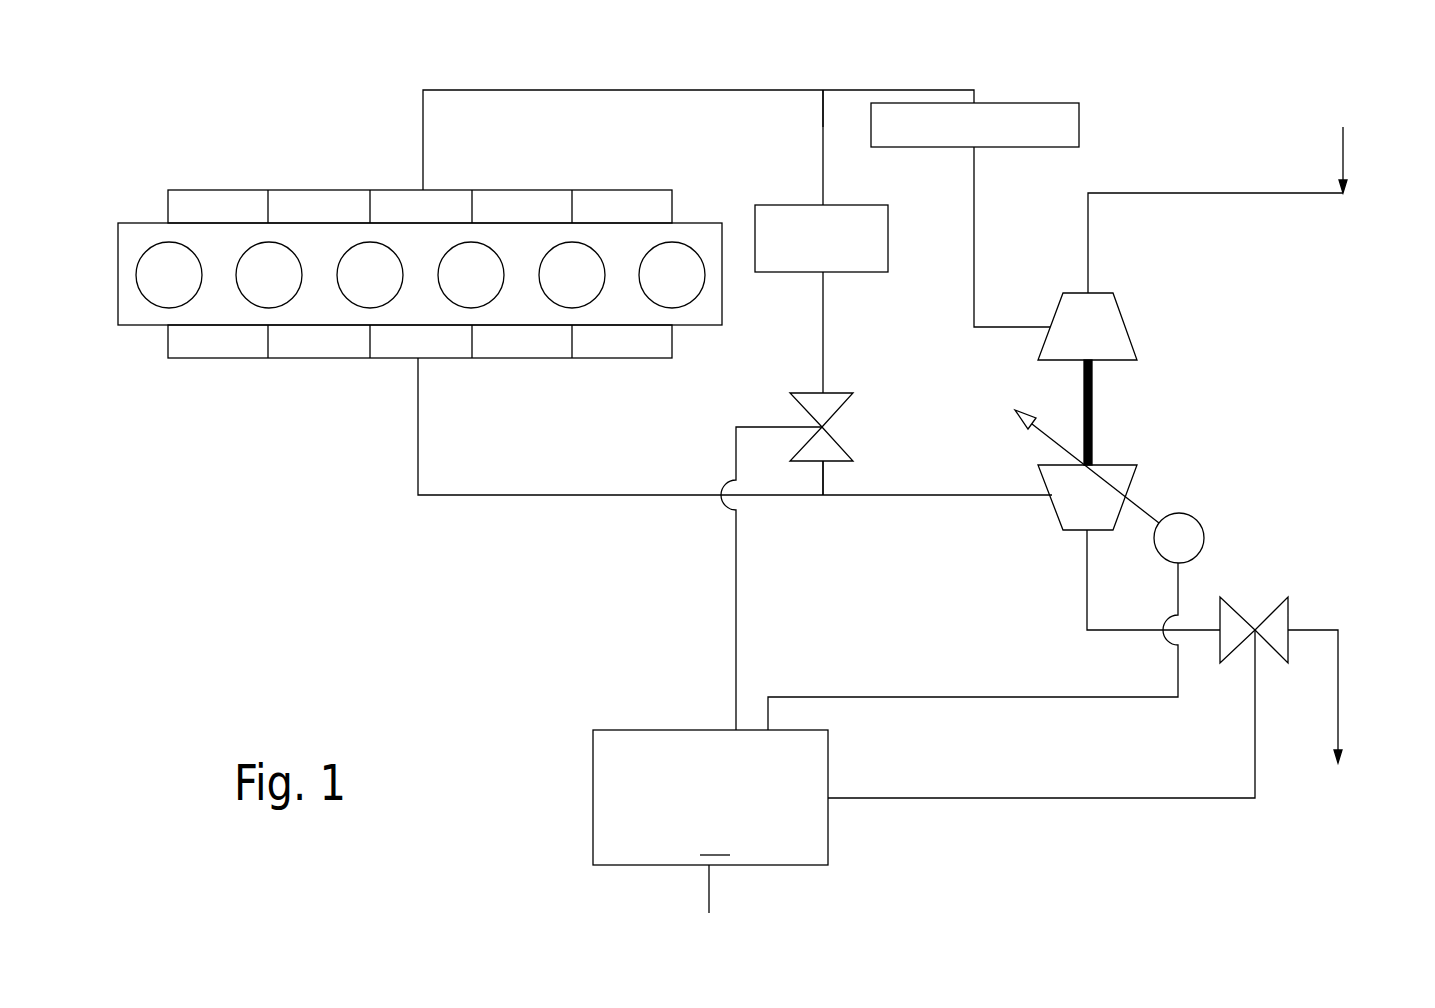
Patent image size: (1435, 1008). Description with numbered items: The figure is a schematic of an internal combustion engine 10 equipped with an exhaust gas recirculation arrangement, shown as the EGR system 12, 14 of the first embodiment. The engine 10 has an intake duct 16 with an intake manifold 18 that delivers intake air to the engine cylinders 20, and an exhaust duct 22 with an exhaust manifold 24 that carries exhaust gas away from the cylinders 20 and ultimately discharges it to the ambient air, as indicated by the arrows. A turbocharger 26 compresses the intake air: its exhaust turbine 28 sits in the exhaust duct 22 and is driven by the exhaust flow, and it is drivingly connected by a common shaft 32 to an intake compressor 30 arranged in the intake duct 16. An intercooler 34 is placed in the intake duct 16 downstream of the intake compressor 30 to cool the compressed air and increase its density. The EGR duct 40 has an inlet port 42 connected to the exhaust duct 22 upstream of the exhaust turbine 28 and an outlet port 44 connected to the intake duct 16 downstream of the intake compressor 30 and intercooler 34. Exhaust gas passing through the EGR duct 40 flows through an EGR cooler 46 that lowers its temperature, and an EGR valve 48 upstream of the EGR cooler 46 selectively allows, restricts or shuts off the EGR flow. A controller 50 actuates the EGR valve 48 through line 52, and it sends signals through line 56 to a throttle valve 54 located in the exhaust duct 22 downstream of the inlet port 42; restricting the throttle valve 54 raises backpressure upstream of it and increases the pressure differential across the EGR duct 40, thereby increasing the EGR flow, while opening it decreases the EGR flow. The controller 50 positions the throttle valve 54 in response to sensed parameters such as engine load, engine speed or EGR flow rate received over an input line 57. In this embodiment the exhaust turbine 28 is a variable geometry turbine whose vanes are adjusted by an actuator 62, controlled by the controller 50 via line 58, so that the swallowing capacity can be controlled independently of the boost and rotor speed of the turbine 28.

The internal combustion engine 10 is at (297, 97).
The EGR system 12 is at (537, 638).
The EGR system 14 is at (910, 304).
The intake duct 16 is at (583, 90).
The intake manifold 18 is at (210, 208).
The engine cylinders 20 is at (145, 322).
The exhaust duct 22 is at (562, 497).
The exhaust manifold 24 is at (245, 350).
The turbocharger 26 is at (1181, 382).
The exhaust turbine 28 is at (1115, 478).
The intake compressor 30 is at (1098, 310).
The common shaft 32 is at (1092, 413).
The intercooler 34 is at (1079, 127).
The EGR duct 40 is at (822, 175).
The inlet port 42 is at (832, 487).
The outlet port 44 is at (823, 127).
The EGR cooler 46 is at (868, 205).
The EGR valve 48 is at (838, 403).
The controller 50 is at (710, 797).
The line 52 is at (736, 653).
The throttle valve 54 is at (1288, 660).
The line 56 is at (1067, 800).
The input line 57 is at (709, 890).
The line 58 is at (1035, 697).
The actuator 62 is at (1198, 545).